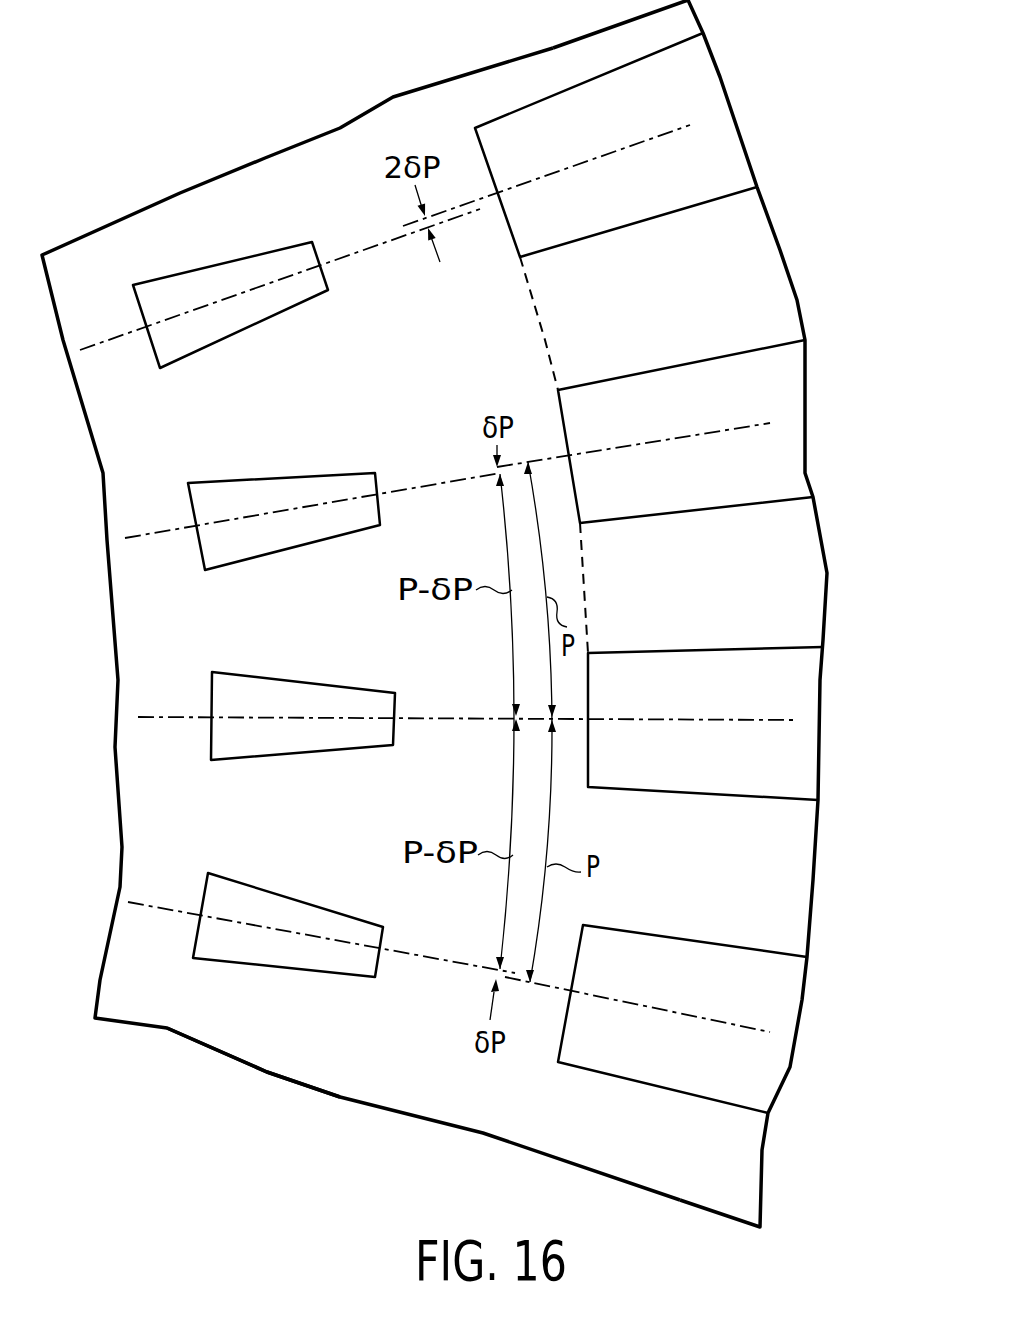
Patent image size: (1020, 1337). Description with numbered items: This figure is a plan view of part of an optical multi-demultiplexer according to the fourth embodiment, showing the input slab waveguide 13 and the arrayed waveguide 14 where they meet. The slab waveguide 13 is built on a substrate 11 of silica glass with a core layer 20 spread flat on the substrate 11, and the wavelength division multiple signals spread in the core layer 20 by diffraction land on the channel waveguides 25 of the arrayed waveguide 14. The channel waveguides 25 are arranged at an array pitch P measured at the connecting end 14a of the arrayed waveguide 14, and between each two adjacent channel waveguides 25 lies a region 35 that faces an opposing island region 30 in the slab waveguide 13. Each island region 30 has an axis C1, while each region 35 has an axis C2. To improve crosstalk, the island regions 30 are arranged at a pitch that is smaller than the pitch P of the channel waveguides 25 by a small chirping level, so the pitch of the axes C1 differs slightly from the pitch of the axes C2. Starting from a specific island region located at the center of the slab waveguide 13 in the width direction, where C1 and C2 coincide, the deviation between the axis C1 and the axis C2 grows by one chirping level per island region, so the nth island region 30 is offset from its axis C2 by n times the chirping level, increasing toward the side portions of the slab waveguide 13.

The substrate 11 is at (267, 1074).
The input slab waveguide 13 is at (270, 147).
The arrayed waveguide 14 is at (550, 47).
The connecting end 14a is at (538, 321).
The core layer 20 is at (435, 373).
The channel waveguides 25 is at (600, 295).
The island regions 30 is at (220, 280).
The region between adjacent channel waveguides 35 is at (708, 77).
The axis of island region C1 is at (120, 347).
The axis of region between channel waveguides C2 is at (588, 157).